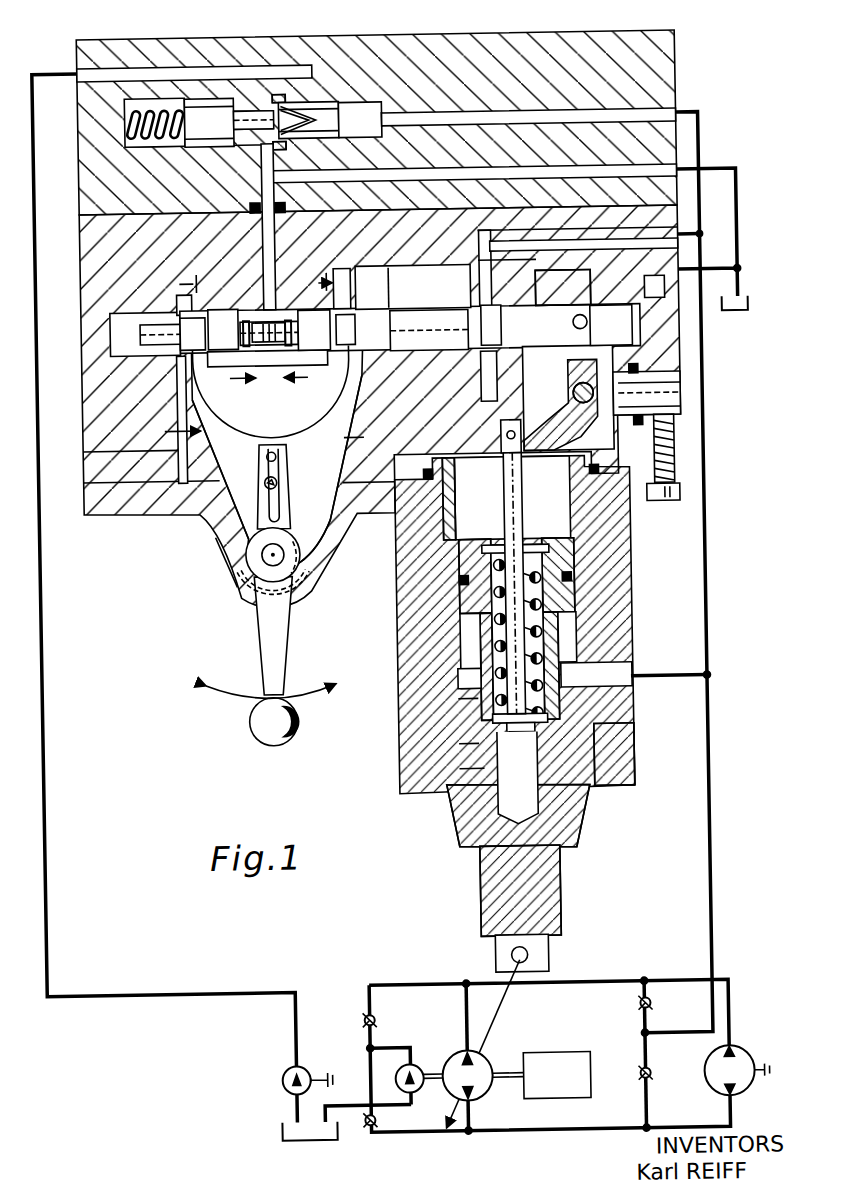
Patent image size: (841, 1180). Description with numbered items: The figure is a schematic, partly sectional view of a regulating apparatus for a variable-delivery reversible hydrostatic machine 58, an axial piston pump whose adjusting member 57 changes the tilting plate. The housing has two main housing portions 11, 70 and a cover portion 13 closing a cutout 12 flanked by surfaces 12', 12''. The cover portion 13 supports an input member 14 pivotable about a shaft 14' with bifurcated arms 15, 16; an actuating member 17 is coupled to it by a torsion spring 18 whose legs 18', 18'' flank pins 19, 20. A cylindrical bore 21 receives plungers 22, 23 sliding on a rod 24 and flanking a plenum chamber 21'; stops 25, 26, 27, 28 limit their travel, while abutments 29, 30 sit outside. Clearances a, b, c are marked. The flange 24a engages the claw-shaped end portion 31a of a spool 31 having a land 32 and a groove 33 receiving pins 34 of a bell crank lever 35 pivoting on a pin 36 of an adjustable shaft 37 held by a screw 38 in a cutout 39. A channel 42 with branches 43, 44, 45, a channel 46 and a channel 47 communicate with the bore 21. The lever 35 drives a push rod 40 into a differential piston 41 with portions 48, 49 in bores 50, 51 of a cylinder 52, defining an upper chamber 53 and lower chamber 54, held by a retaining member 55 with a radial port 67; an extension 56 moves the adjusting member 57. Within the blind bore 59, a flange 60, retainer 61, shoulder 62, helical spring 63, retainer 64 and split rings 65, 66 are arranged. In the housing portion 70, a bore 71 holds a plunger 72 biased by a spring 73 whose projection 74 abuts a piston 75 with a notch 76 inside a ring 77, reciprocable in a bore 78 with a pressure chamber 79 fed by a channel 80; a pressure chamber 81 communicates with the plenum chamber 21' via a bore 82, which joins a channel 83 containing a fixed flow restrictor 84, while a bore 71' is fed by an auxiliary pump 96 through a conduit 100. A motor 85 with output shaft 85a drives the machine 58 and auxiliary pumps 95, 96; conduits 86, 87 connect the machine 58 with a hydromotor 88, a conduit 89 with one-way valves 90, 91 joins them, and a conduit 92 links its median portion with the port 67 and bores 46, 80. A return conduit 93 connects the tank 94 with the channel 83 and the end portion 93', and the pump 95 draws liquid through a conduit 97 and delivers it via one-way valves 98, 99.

The main housing portion 11 is at (88, 460).
The cutout 12 is at (365, 408).
The surface flanking the cutout 12' is at (214, 469).
The surface flanking the cutout 12'' is at (333, 468).
The cover portion 13 is at (110, 500).
The input member 14 is at (256, 459).
The shaft 14' is at (218, 579).
The bifurcated arm 15 is at (180, 355).
The bifurcated arm 16 is at (345, 372).
The actuating member 17 is at (268, 640).
The torsion spring 18 is at (235, 561).
The spring leg 18' is at (228, 554).
The spring leg 18'' is at (343, 555).
The motion transmitting pin 19 is at (278, 455).
The motion transmitting pin 20 is at (268, 483).
The cylindrical bore 21 is at (317, 293).
The plenum chamber 21' is at (280, 379).
The plunger 22 is at (228, 316).
The plunger 23 is at (315, 318).
The motion transmitting rod 24 is at (155, 330).
The disk-shaped flange 24a is at (372, 268).
The ring-shaped stop 25 is at (250, 345).
The ring-shaped stop 26 is at (266, 345).
The ring-shaped stop 27 is at (280, 345).
The ring-shaped stop 28 is at (294, 345).
The abutment 29 is at (198, 318).
The abutment 30 is at (350, 345).
The valve member or spool 31 is at (425, 335).
The claw-shaped end portion 31a is at (482, 262).
The land 32 is at (505, 335).
The annular groove 33 is at (588, 330).
The pin 34 is at (620, 325).
The bell crank lever 35 is at (660, 392).
The pin 36 is at (677, 440).
The axially adjustable shaft 37 is at (600, 410).
The screw 38 is at (668, 505).
The cutout 39 is at (677, 478).
The push rod 40 is at (510, 483).
The differential piston 41 is at (470, 640).
The channel 42 is at (434, 270).
The branch 43 is at (350, 273).
The branch 44 is at (545, 300).
The branch 45 is at (668, 292).
The channel 46 is at (660, 210).
The channel 47 is at (503, 427).
The larger-diameter portion 48 is at (560, 580).
The smaller-diameter portion 49 is at (575, 650).
The cylinder bore 50 is at (600, 525).
The cylinder bore 51 is at (600, 780).
The cylinder 52 is at (600, 748).
The upper chamber 53 is at (470, 555).
The lower chamber 54 is at (462, 668).
The threaded retaining member 55 is at (405, 746).
The extension or flat 56 is at (542, 955).
The adjusting member 57 is at (488, 1028).
The variable-delivery reversible hydrostatic machine 58 is at (478, 1090).
The axial blind bore 59 is at (490, 690).
The flange 60 is at (460, 795).
The spring retainer 61 is at (548, 722).
The internal shoulder 62 is at (490, 740).
The helical spring 63 is at (545, 612).
The spring retainer 64 is at (550, 551).
The split ring 65 is at (450, 565).
The split ring 66 is at (525, 535).
The radial port 67 is at (632, 678).
The main housing portion 70 is at (650, 75).
The cylindrical bore 71 is at (193, 91).
The bore 71' is at (194, 43).
The plunger 72 is at (214, 100).
The helical spring 73 is at (143, 108).
The smaller-diameter projection 74 is at (262, 110).
The piston 75 is at (330, 112).
The triangular notch 76 is at (286, 92).
The ring 77 is at (300, 104).
The cylindrical bore 78 is at (372, 102).
The pressure chamber 79 is at (400, 114).
The channel 80 is at (497, 112).
The pressure chamber 81 is at (248, 108).
The bore 82 is at (262, 166).
The channel 83 is at (690, 120).
The fixed flow restrictor 84 is at (625, 175).
The motor 85 is at (566, 1055).
The output shaft 85a is at (318, 1076).
The conduit 86 is at (618, 984).
The conduit 87 is at (608, 1130).
The hydromotor 88 is at (710, 1098).
The conduit 89 is at (636, 1052).
The one-way valve 90 is at (645, 1008).
The one-way valve 91 is at (644, 1075).
The conduit 92 is at (703, 880).
The return conduit 93 is at (708, 219).
The right-hand end portion 93' is at (707, 221).
The liquid collecting tank 94 is at (255, 1133).
The auxiliary pump 95 is at (420, 1068).
The auxiliary pump 96 is at (280, 1070).
The conduit 97 is at (345, 1105).
The one-way valve 98 is at (368, 1016).
The one-way valve 99 is at (367, 1118).
The conduit 100 is at (40, 722).
The clearance a is at (269, 389).
The clearance b is at (264, 418).
The clearance c is at (256, 271).